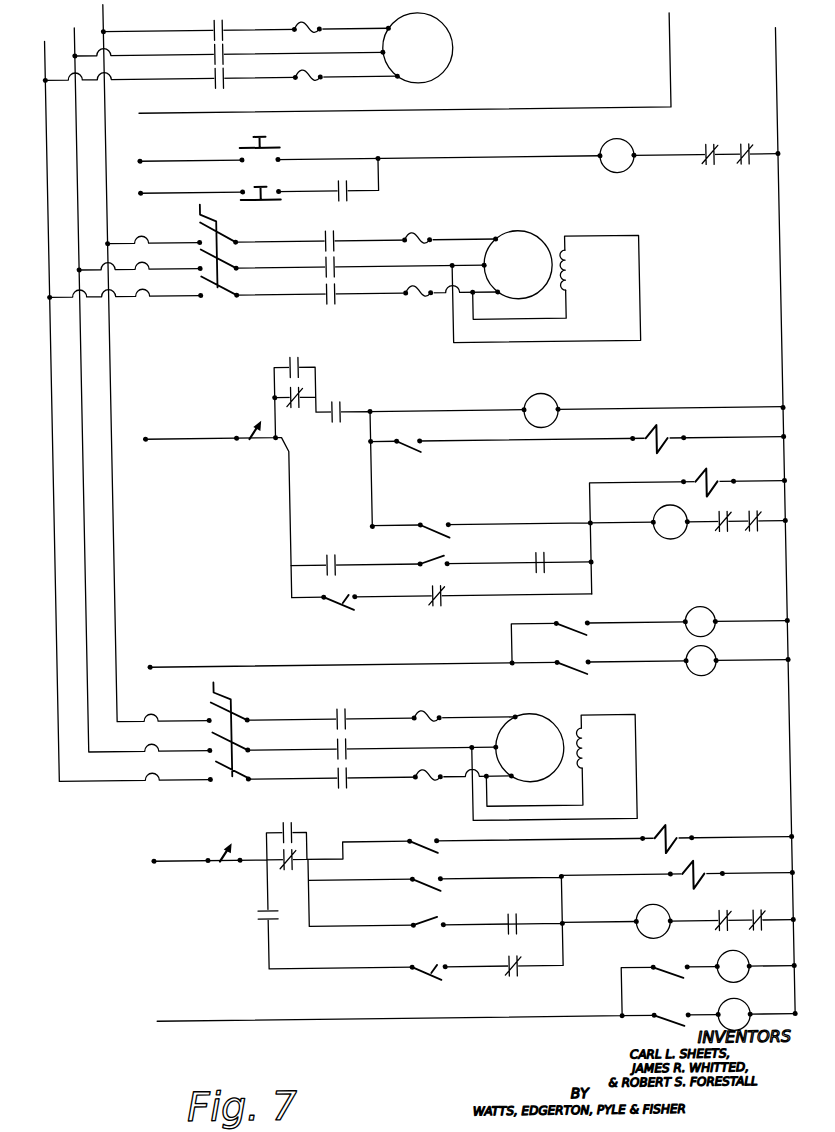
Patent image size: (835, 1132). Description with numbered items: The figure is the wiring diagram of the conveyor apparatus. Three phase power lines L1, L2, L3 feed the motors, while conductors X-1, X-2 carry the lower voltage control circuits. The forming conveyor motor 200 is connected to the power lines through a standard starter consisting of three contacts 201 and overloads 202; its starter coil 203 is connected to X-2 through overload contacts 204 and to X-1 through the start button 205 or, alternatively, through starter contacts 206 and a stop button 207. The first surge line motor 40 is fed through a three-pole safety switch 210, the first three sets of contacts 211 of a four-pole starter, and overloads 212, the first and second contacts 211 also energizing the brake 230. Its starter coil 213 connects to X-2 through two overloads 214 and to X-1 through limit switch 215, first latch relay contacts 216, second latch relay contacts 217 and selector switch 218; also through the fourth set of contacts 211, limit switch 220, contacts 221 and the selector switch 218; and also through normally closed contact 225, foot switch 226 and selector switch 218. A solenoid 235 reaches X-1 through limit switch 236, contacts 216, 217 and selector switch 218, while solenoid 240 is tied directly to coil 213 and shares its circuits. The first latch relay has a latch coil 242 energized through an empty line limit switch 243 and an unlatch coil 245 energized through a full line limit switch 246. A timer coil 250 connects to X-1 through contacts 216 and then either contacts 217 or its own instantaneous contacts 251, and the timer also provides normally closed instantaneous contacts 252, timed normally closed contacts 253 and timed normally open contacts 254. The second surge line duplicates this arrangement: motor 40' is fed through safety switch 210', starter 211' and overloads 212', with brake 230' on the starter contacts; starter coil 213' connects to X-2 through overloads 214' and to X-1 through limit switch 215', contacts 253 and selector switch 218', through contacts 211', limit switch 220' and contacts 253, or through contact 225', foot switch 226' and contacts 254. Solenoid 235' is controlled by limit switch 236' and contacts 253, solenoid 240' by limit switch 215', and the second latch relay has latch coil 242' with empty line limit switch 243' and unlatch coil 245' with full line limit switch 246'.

The power line L1 is at (53, 58).
The power line L2 is at (83, 36).
The power line L3 is at (112, 13).
The control circuit conductor X-1 is at (678, 48).
The control circuit conductor X-2 is at (784, 48).
The motor 200 is at (463, 52).
The contacts 201 is at (222, 33).
The overloads 202 is at (326, 26).
The starter coil 203 is at (610, 166).
The overload contacts 204 is at (752, 167).
The start button 205 is at (290, 158).
The starter contacts 206 is at (353, 194).
The stop button 207 is at (249, 190).
The three-pole safety switch 210 is at (239, 251).
The starter contacts 211 is at (425, 410).
The overloads 212 is at (429, 273).
The motor 40 is at (517, 264).
The brake 230 is at (588, 282).
The starter coil 213 is at (661, 534).
The overloads 214 is at (738, 533).
The limit switch 215 is at (440, 516).
The first latch relay normally open contacts 216 is at (343, 406).
The second latch relay normally closed contacts 217 is at (300, 404).
The selector switch 218 is at (235, 422).
The limit switch 220 is at (415, 555).
The first latch relay normally open contacts 221 is at (331, 556).
The first latch relay normally closed contact 225 is at (438, 612).
The foot switch 226 is at (321, 613).
The solenoid 235 is at (637, 445).
The limit switch 236 is at (432, 453).
The solenoid 240 is at (724, 479).
The latch coil 242 is at (702, 612).
The empty line limit switch 243 is at (594, 633).
The unlatch coil 245 is at (708, 675).
The full line limit switch 246 is at (595, 672).
The timer coil 250 is at (553, 407).
The normally open instantaneous timer contacts 251 is at (304, 365).
The three-pole safety switch 210' is at (249, 731).
The four-pole starter 211' is at (415, 822).
The overloads 212' is at (428, 739).
The motor 40' is at (529, 747).
The brake 230' is at (602, 758).
The selector switch 218' is at (217, 844).
The limit switch 236' is at (432, 833).
The solenoid 235' is at (690, 833).
The solenoid 240' is at (716, 871).
The limit switch 215' is at (452, 871).
The limit switch 220' is at (412, 909).
The foot switch 226' is at (448, 959).
The second latch relay normally closed contact 225' is at (523, 979).
The starter coil 213' is at (637, 912).
The overloads 214' is at (742, 907).
The empty line limit switch 243' is at (653, 960).
The full line limit switch 246' is at (664, 1007).
The latch coil 242' is at (746, 954).
The unlatch coil 245' is at (749, 1004).
The normally closed instantaneous timer contacts 252 is at (286, 826).
The normally closed time delay timer contacts 253 is at (284, 867).
The normally open time delay timer contacts 254 is at (258, 918).